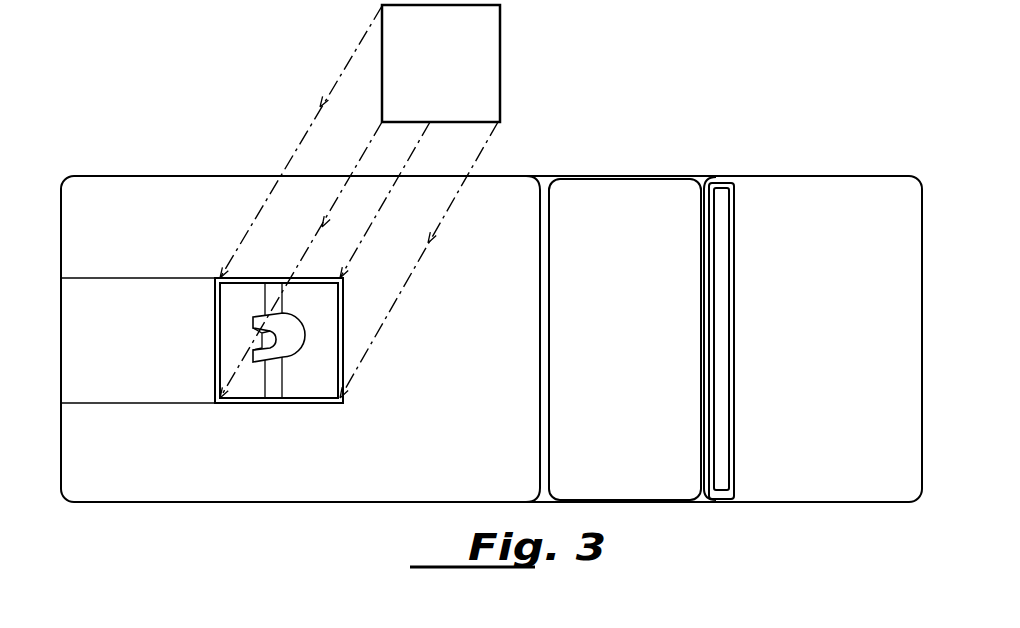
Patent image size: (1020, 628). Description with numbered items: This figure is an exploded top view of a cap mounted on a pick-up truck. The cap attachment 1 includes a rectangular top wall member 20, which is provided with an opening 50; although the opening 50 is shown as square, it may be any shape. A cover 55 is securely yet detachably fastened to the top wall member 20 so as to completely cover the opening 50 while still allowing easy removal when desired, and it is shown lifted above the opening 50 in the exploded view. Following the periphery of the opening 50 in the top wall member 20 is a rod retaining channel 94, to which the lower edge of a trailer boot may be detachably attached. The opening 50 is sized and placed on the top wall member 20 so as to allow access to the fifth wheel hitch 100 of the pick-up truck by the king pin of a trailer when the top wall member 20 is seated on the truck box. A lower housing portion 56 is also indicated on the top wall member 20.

The cap attachment 1 is at (362, 507).
The top wall member 20 is at (204, 197).
The opening 50 is at (323, 387).
The cover 55 is at (468, 82).
The lower housing portion 56 is at (150, 375).
The rod retaining channel 94 is at (217, 331).
The fifth wheel hitch 100 is at (298, 357).